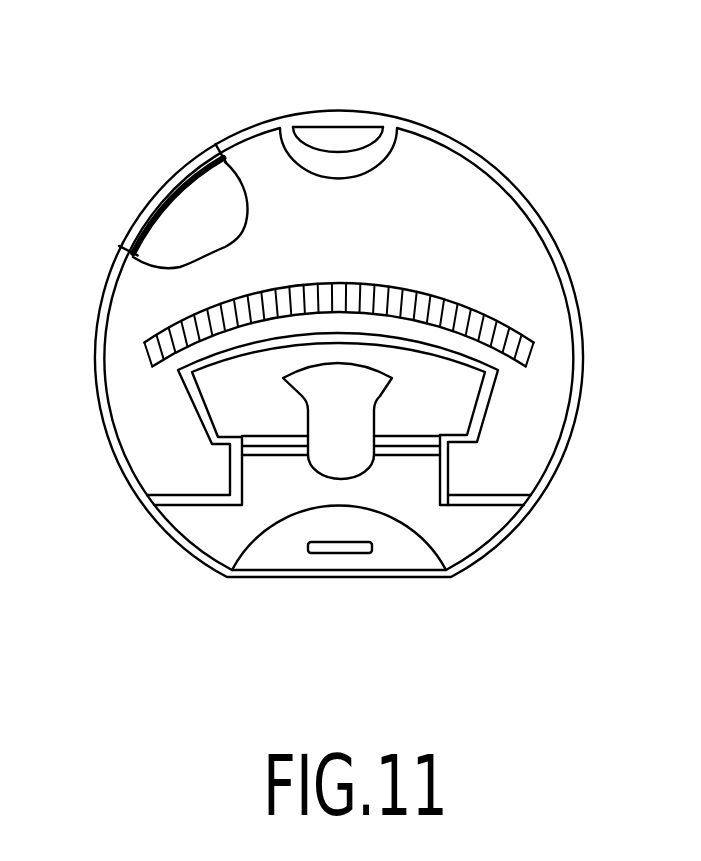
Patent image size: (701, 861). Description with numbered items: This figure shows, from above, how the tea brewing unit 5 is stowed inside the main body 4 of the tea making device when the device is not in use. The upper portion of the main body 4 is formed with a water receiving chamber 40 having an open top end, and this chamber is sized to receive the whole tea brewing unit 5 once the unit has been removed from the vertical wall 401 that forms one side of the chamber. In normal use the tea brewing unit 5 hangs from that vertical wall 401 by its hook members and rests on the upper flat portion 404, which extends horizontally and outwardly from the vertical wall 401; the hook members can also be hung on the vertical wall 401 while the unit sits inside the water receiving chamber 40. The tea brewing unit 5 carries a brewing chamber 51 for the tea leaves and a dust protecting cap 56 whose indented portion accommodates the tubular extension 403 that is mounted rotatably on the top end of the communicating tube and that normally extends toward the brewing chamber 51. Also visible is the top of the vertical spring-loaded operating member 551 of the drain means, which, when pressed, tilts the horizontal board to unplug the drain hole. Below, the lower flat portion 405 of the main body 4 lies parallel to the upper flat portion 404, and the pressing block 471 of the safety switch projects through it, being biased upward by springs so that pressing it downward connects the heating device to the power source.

The main body 4 is at (122, 232).
The tea brewing unit 5 is at (187, 190).
The water receiving chamber 40 is at (148, 213).
The brewing chamber 51 is at (457, 387).
The dust protecting cap 56 is at (500, 243).
The vertical wall 401 is at (412, 453).
The tubular extension 403 is at (345, 393).
The upper flat portion 404 is at (483, 522).
The lower flat portion 405 is at (283, 552).
The pressing block 471 is at (353, 547).
The operating member 551 is at (375, 130).